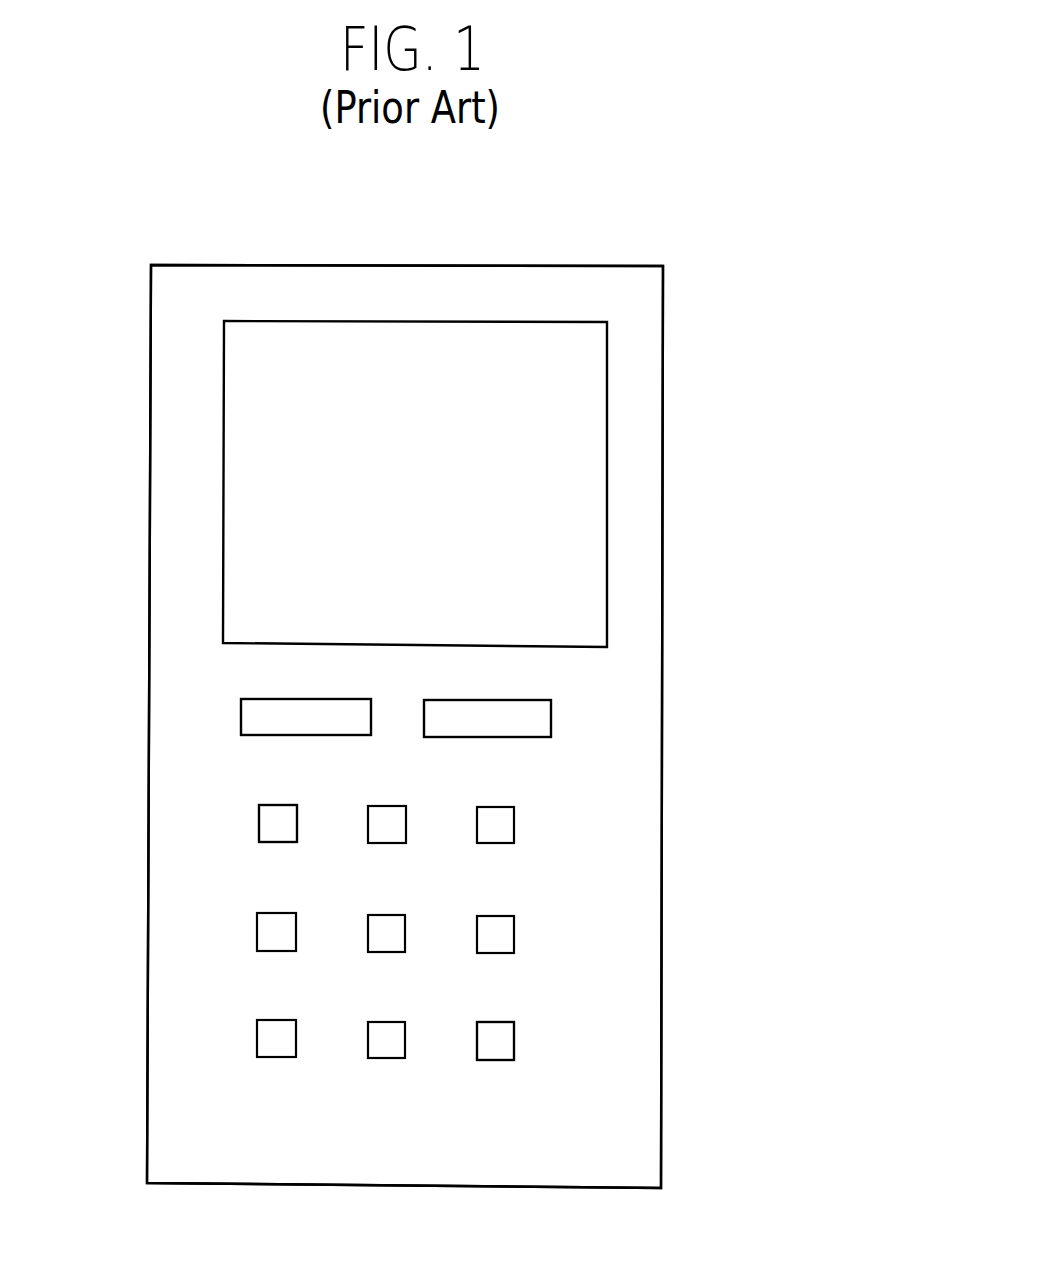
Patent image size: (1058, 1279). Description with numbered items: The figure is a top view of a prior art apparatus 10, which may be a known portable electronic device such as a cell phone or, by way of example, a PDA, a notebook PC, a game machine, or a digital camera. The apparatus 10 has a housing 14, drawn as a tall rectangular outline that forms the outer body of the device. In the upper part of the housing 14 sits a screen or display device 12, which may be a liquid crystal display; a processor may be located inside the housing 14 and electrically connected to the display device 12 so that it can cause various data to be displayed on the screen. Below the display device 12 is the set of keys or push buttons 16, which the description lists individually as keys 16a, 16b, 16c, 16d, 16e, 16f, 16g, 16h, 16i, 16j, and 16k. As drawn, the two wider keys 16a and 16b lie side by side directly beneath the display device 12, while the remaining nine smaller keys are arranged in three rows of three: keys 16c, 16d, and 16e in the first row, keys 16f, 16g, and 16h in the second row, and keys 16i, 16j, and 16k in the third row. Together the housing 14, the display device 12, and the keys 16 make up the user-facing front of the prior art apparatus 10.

The prior art apparatus 10 is at (760, 244).
The display device 12 is at (440, 365).
The housing 14 is at (633, 599).
The keypad 16 is at (628, 863).
The key 16a is at (260, 723).
The key 16b is at (517, 722).
The key 16c is at (271, 832).
The key 16d is at (380, 829).
The key 16e is at (498, 830).
The key 16f is at (283, 940).
The key 16g is at (391, 942).
The key 16h is at (497, 940).
The key 16i is at (278, 1043).
The key 16j is at (390, 1043).
The key 16k is at (498, 1044).